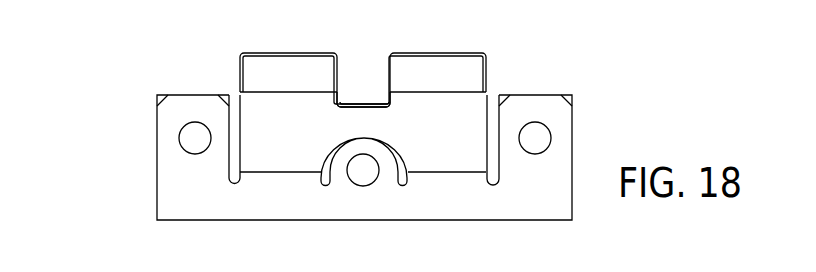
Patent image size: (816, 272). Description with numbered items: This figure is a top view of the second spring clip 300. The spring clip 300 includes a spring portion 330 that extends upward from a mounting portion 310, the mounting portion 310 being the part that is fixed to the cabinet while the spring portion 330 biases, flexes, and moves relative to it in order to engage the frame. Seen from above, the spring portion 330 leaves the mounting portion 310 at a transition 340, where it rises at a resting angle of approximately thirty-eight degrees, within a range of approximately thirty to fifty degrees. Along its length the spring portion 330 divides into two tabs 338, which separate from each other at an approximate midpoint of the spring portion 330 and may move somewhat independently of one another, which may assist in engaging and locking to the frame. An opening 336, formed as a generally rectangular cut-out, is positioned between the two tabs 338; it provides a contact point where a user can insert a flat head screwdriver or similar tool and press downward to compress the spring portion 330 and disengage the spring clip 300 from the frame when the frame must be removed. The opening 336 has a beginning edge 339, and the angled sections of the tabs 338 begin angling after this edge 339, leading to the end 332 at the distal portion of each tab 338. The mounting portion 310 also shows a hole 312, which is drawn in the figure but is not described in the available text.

The second spring clip 300 is at (127, 70).
The mounting portion 310 is at (540, 188).
The mounting hole 312 is at (195, 138).
The spring portion 330 is at (466, 125).
The end 332 is at (473, 60).
The opening 336 is at (372, 105).
The tabs 338 is at (258, 147).
The beginning edge 339 is at (352, 107).
The transition 340 is at (447, 172).